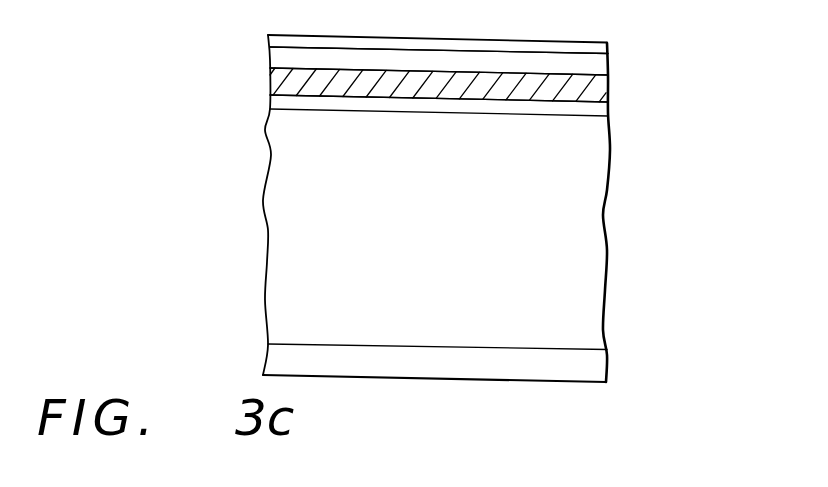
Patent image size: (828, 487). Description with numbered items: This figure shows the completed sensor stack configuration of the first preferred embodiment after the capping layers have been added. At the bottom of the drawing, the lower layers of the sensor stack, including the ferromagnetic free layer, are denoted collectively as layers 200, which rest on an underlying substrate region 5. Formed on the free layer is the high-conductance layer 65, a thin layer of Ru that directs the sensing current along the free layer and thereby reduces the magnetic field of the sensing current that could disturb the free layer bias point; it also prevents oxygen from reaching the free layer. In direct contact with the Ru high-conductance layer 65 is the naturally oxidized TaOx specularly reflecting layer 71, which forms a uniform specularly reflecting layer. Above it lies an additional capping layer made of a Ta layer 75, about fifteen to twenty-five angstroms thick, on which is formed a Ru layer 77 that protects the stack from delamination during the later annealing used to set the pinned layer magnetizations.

The Ru layer 77 is at (585, 48).
The Ta layer 75 is at (585, 63).
The naturally oxidized TaOx specularly reflecting layer 71 is at (585, 88).
The high-conductance layer 65 is at (585, 109).
The layers (10)–(60) inclusive 200 is at (252, 108).
The substrate 5 is at (592, 367).